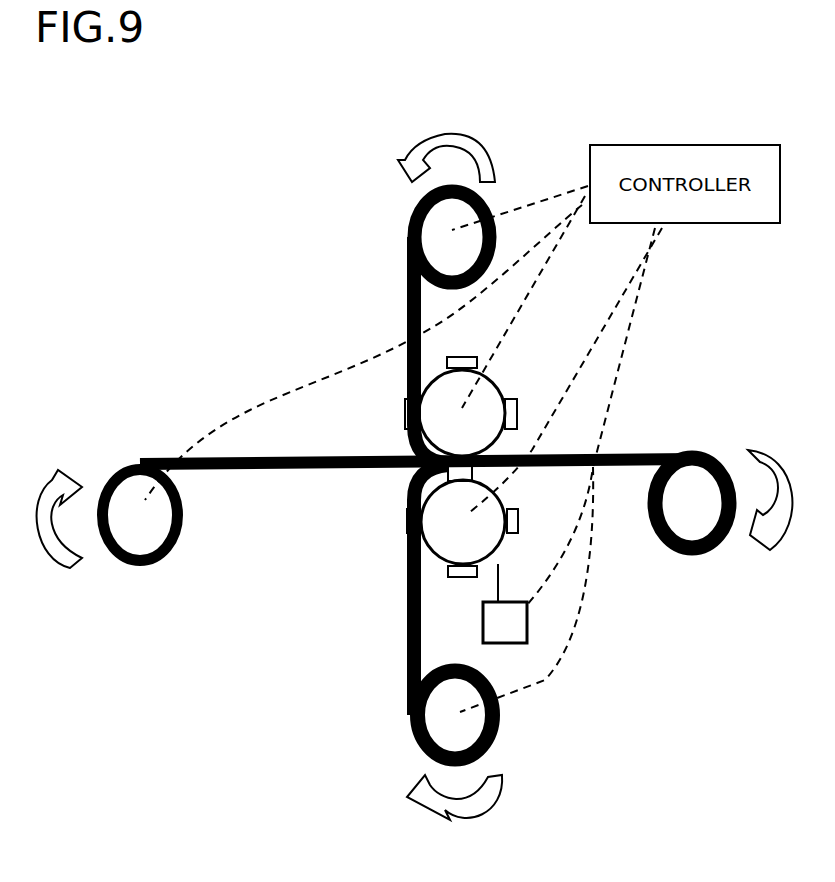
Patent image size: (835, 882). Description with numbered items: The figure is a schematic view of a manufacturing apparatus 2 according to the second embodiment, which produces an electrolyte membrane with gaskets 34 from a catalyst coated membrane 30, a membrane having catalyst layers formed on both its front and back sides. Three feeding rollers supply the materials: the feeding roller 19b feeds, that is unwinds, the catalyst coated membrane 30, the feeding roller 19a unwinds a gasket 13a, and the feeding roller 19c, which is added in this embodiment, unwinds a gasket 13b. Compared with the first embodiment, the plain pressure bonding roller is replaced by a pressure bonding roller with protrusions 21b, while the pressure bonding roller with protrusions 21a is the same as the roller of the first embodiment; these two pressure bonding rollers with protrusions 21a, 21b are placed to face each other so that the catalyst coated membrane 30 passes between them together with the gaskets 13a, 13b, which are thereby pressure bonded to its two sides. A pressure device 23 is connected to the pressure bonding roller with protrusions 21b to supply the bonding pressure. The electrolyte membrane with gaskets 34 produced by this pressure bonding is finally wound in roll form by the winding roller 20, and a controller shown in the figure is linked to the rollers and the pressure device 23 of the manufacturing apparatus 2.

The manufacturing apparatus 2 is at (300, 158).
The gasket 13a is at (405, 322).
The gasket 13b is at (406, 607).
The feeding roller 19a is at (460, 238).
The feeding roller 19b is at (125, 543).
The feeding roller 19c is at (433, 722).
The winding roller 20 is at (687, 557).
The pressure bonding roller with protrusions 21a is at (483, 386).
The pressure bonding roller with protrusions 21b is at (487, 529).
The pressure device 23 is at (510, 630).
The catalyst coated membrane 30 is at (182, 465).
The electrolyte membrane with gaskets 34 is at (570, 458).